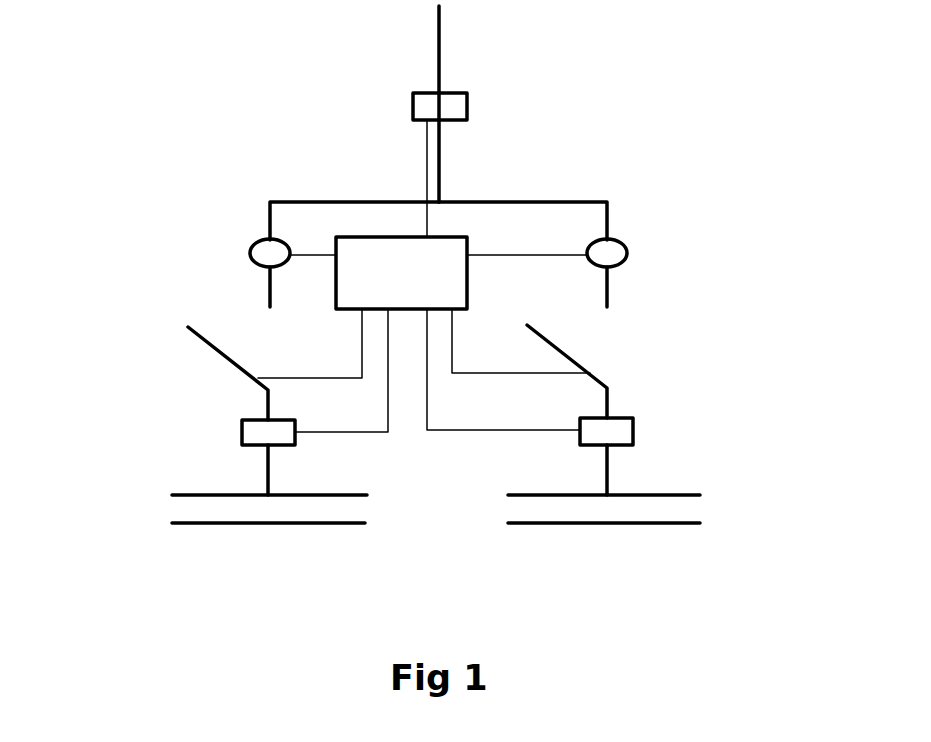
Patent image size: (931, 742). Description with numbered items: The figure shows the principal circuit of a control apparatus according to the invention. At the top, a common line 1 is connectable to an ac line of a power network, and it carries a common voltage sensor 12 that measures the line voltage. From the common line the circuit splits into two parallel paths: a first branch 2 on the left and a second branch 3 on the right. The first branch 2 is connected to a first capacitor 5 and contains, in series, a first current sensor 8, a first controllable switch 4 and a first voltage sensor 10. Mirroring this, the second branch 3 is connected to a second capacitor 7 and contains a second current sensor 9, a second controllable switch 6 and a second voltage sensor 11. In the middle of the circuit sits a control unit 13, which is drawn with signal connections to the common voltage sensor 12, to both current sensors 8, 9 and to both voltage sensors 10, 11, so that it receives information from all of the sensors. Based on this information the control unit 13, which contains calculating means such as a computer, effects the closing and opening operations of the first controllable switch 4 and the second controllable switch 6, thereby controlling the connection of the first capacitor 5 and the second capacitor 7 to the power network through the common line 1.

The common line 1 is at (439, 33).
The first branch 2 is at (267, 212).
The second branch 3 is at (607, 220).
The first controllable switch 4 is at (227, 357).
The first capacitor 5 is at (233, 495).
The second controllable switch 6 is at (570, 355).
The second capacitor 7 is at (650, 495).
The first current sensor 8 is at (248, 257).
The second current sensor 9 is at (627, 258).
The first voltage sensor 10 is at (242, 437).
The second voltage sensor 11 is at (633, 435).
The common voltage sensor 12 is at (467, 103).
The control unit 13 is at (424, 276).